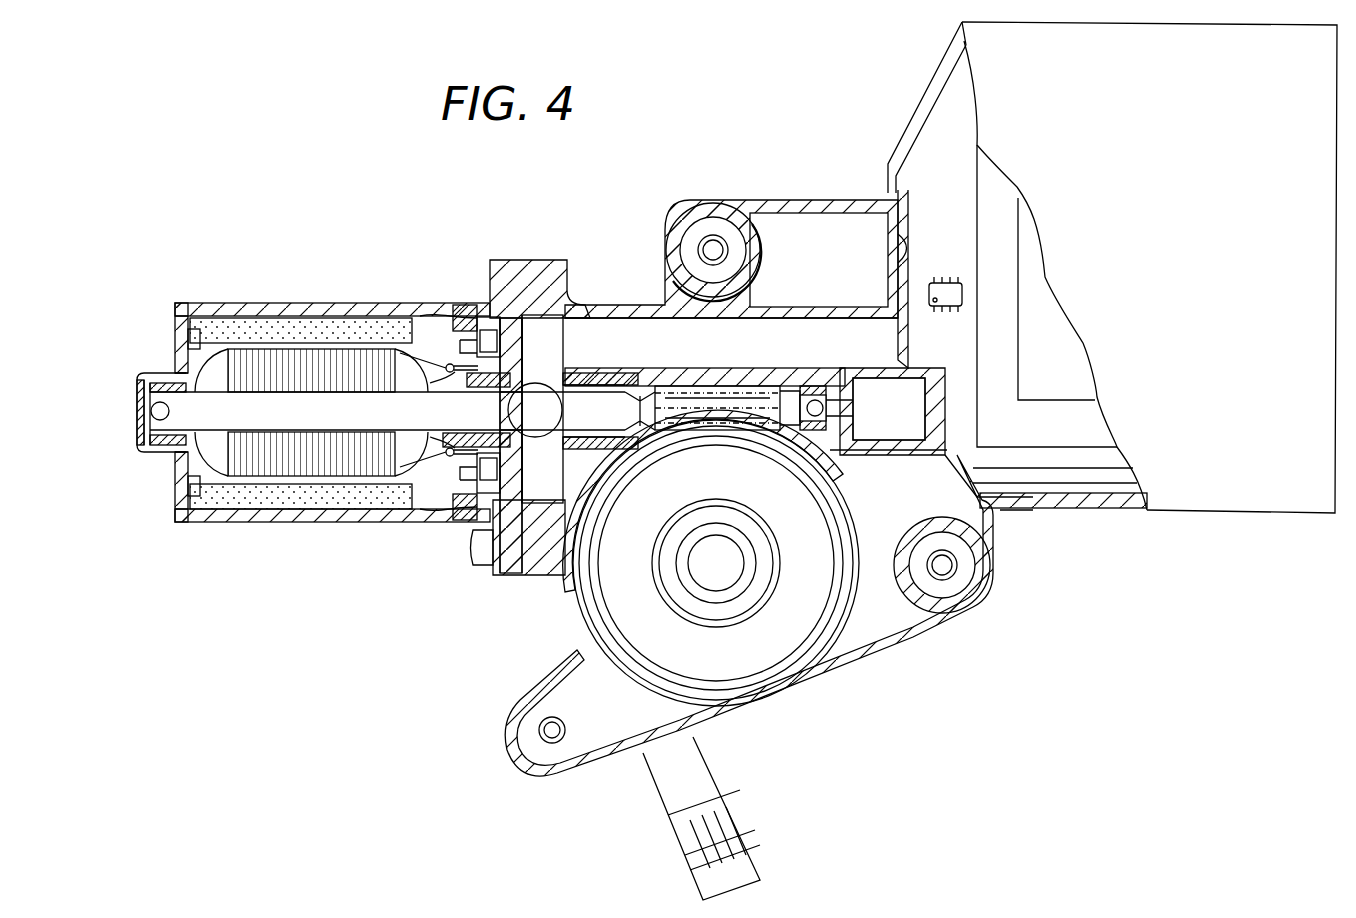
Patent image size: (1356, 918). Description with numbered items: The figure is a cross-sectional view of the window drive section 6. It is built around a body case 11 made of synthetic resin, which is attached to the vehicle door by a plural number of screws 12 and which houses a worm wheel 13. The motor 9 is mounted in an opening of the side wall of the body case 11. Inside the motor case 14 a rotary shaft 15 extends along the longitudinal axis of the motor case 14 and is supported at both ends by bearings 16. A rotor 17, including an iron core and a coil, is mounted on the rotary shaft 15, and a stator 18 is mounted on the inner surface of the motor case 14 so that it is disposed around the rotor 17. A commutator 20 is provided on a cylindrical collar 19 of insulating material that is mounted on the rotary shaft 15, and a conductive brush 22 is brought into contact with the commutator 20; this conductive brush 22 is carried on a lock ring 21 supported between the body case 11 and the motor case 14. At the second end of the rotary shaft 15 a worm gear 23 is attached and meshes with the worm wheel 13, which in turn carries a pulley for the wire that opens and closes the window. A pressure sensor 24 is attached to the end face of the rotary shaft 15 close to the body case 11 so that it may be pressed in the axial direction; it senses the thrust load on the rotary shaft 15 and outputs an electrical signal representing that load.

The window drive section 6 is at (1067, 573).
The motor 9 is at (232, 302).
The body case 11 is at (880, 618).
The screws 12 is at (713, 250).
The worm wheel 13 is at (617, 585).
The motor case 14 is at (215, 515).
The rotary shaft 15 is at (405, 400).
The bearings 16 is at (160, 388).
The rotor 17 is at (315, 365).
The stator 18 is at (312, 513).
The cylindrical collar 19 is at (445, 460).
The commutator 20 is at (470, 320).
The lock ring 21 is at (515, 320).
The conductive brush 22 is at (492, 478).
The worm gear 23 is at (675, 385).
The pressure sensor 24 is at (880, 390).